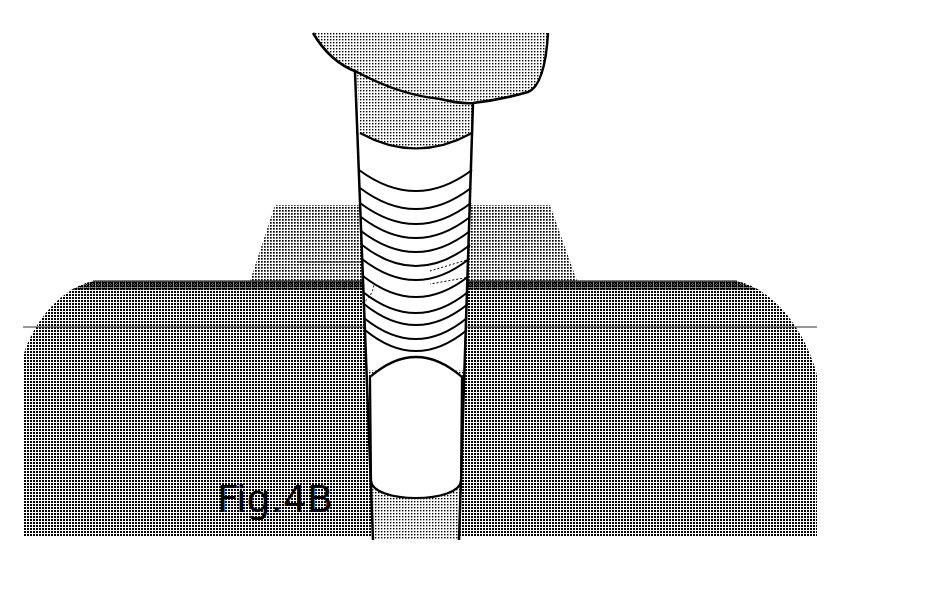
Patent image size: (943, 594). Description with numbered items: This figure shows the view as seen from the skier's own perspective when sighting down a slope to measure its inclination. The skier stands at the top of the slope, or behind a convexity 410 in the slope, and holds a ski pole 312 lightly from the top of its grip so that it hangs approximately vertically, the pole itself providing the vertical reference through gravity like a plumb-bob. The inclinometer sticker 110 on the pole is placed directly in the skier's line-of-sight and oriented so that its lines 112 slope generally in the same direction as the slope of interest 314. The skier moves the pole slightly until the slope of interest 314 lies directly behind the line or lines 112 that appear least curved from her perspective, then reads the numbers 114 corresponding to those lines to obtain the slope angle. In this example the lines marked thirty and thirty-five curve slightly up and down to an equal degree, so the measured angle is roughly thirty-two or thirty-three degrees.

The inclinometer sticker 110 is at (447, 423).
The lines 112 is at (362, 303).
The numbers 114 is at (470, 277).
The ski pole 312 is at (331, 106).
The slope of interest 314 is at (297, 280).
The convexity 410 is at (145, 281).